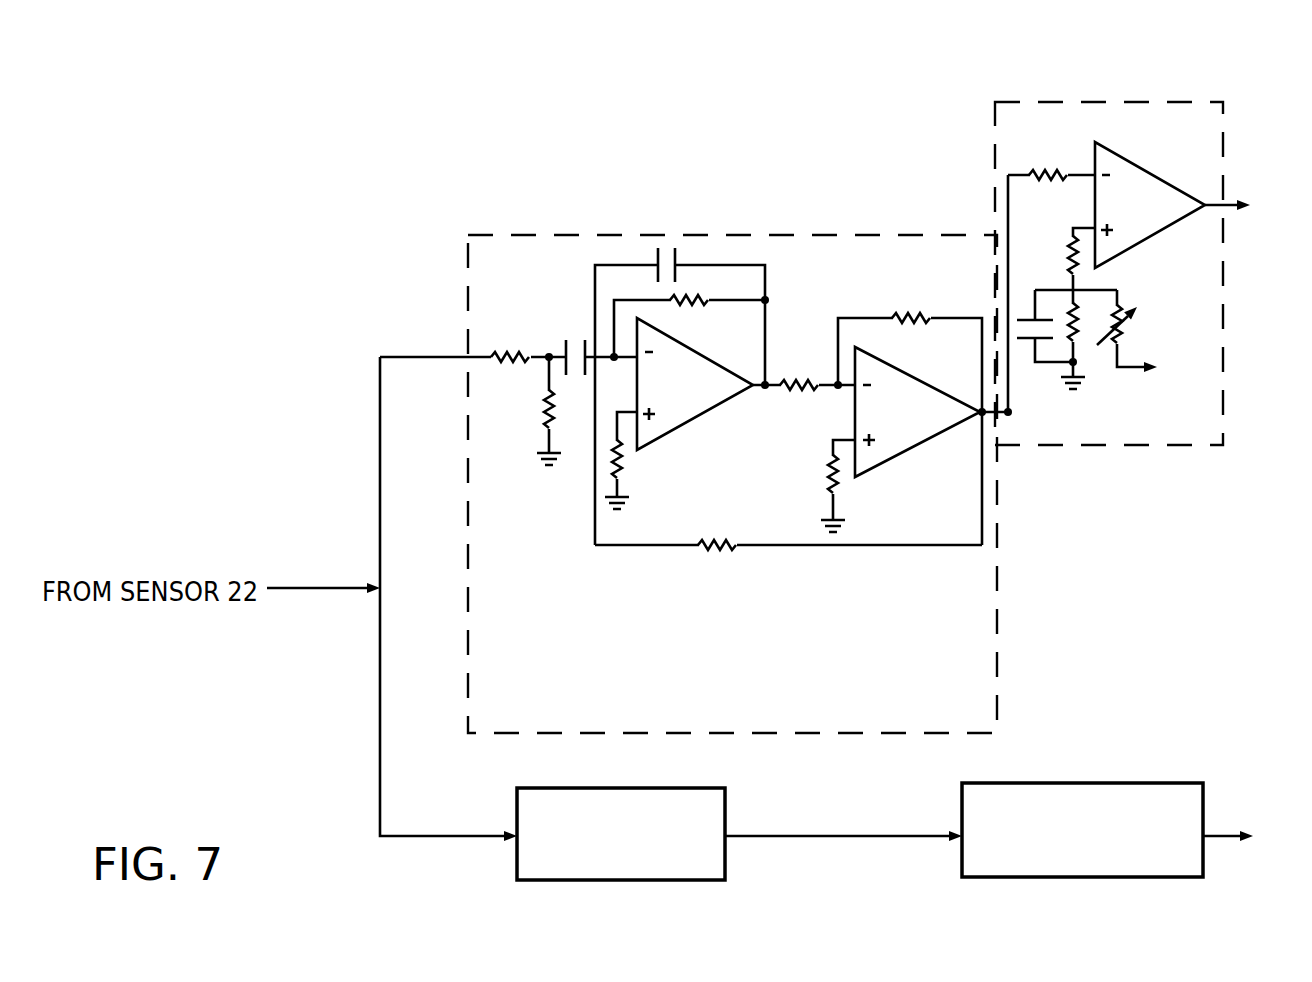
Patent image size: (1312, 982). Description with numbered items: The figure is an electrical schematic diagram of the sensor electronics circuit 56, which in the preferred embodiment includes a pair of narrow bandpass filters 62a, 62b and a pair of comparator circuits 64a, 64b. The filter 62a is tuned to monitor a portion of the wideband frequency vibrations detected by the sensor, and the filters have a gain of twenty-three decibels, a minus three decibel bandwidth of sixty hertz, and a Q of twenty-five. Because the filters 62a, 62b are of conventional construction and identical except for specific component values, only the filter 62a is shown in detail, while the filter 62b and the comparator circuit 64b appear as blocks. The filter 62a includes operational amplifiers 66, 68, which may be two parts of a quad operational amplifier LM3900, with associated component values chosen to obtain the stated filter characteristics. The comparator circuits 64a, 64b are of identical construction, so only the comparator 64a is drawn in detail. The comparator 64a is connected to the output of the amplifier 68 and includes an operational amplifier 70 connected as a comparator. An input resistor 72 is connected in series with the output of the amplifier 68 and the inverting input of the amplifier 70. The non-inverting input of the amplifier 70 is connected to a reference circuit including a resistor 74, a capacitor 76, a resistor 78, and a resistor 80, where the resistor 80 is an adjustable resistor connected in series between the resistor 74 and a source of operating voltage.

The sensor electronics circuit 56 is at (816, 634).
The narrow bandpass filter 62a is at (468, 290).
The narrow bandpass filter 62b is at (528, 868).
The comparator circuit 64a is at (1224, 134).
The comparator circuit 64b is at (980, 860).
The operational amplifier 66 is at (714, 410).
The operational amplifier 68 is at (934, 438).
The operational amplifier 70 is at (1172, 181).
The input resistor 72 is at (1055, 190).
The resistor 74 is at (1067, 254).
The capacitor 76 is at (1025, 341).
The resistor 78 is at (1086, 328).
The adjustable resistor 80 is at (1125, 323).